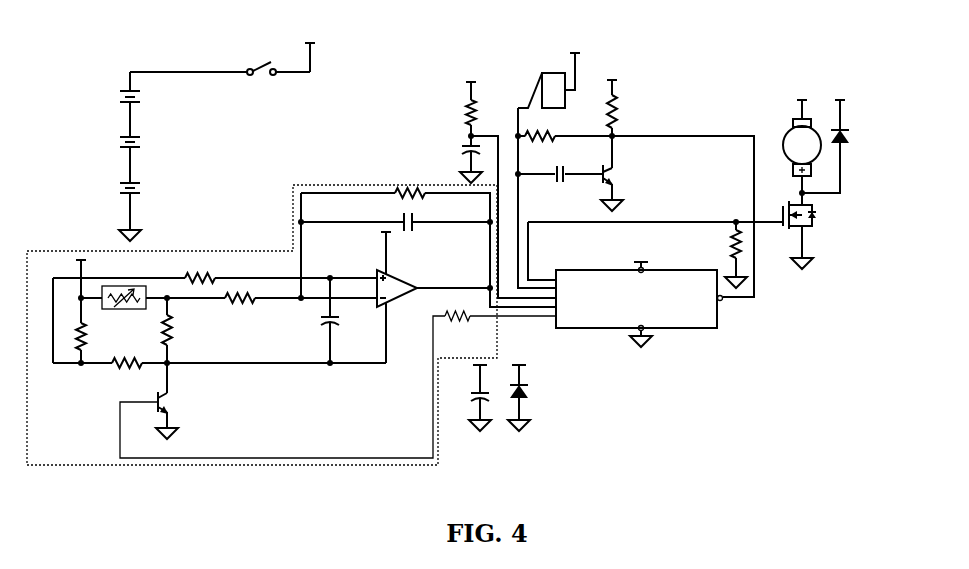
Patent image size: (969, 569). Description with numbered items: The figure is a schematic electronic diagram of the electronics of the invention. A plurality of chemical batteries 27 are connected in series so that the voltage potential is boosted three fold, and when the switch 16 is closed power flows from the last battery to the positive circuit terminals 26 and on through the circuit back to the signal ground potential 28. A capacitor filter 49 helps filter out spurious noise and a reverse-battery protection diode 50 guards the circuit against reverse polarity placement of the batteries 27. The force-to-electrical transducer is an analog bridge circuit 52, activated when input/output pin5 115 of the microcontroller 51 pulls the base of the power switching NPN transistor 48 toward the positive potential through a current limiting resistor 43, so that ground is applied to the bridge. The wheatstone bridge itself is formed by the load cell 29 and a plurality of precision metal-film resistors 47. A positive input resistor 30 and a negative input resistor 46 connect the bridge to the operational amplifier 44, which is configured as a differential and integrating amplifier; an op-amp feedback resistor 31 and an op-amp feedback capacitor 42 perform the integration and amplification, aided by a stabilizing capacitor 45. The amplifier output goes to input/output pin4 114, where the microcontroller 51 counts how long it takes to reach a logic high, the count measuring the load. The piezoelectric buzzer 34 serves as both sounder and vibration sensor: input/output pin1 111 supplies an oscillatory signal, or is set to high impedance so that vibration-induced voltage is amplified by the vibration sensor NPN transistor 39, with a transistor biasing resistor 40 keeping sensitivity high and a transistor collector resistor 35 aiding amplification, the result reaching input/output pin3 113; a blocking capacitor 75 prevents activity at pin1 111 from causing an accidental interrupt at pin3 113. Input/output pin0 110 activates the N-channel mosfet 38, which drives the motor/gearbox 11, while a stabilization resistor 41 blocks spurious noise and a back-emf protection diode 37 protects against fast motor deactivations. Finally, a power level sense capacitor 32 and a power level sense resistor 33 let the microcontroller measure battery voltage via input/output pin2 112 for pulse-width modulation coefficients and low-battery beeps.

The motor/gearbox 11 is at (783, 142).
The switch 16 is at (258, 62).
The positive circuit terminals 26 is at (312, 43).
The chemical batteries 27 is at (124, 93).
The signal ground potential 28 is at (124, 235).
The load cell 29 is at (140, 306).
The positive input resistor 30 is at (200, 276).
The op-amp feedback resistor 31 is at (410, 190).
The power level sense capacitor 32 is at (460, 150).
The power level sense resistor 33 is at (470, 108).
The piezoelectric buzzer 34 is at (536, 85).
The transistor collector resistor 35 is at (620, 116).
The back-emf protection diode 37 is at (852, 137).
The N-channel mosfet 38 is at (814, 216).
The vibration sensor NPN transistor 39 is at (625, 172).
The transistor biasing resistor 40 is at (550, 133).
The stabilization resistor 41 is at (730, 249).
The op-amp feedback capacitor 42 is at (418, 230).
The current limiting resistor 43 is at (463, 330).
The operational amplifier 44 is at (393, 298).
The stabilizing capacitor 45 is at (325, 320).
The negative input resistor 46 is at (235, 300).
The precision metal-film resistors 47 is at (78, 338).
The power switching NPN transistor 48 is at (172, 400).
The capacitor filter 49 is at (478, 396).
The reverse-battery protection diode 50 is at (530, 392).
The microcontroller 51 is at (692, 330).
The analog bridge circuit 52 is at (77, 465).
The blocking capacitor 75 is at (560, 182).
The input/output pin0 110 is at (536, 276).
The input/output pin1 111 is at (546, 289).
The input/output pin2 112 is at (546, 298).
The input/output pin3 113 is at (727, 300).
The input/output pin4 114 is at (534, 312).
The input/output pin5 115 is at (550, 318).